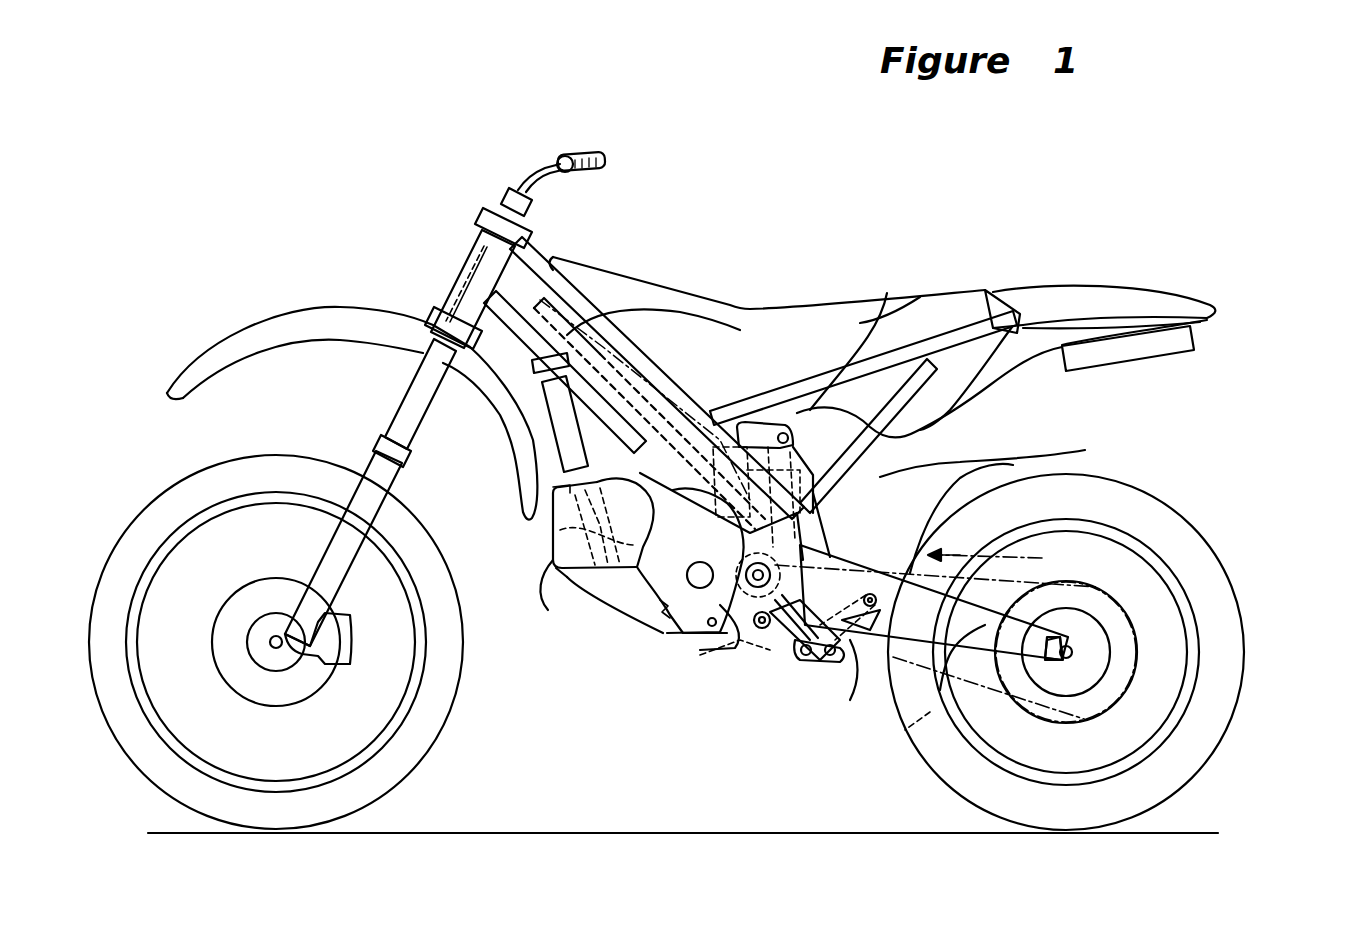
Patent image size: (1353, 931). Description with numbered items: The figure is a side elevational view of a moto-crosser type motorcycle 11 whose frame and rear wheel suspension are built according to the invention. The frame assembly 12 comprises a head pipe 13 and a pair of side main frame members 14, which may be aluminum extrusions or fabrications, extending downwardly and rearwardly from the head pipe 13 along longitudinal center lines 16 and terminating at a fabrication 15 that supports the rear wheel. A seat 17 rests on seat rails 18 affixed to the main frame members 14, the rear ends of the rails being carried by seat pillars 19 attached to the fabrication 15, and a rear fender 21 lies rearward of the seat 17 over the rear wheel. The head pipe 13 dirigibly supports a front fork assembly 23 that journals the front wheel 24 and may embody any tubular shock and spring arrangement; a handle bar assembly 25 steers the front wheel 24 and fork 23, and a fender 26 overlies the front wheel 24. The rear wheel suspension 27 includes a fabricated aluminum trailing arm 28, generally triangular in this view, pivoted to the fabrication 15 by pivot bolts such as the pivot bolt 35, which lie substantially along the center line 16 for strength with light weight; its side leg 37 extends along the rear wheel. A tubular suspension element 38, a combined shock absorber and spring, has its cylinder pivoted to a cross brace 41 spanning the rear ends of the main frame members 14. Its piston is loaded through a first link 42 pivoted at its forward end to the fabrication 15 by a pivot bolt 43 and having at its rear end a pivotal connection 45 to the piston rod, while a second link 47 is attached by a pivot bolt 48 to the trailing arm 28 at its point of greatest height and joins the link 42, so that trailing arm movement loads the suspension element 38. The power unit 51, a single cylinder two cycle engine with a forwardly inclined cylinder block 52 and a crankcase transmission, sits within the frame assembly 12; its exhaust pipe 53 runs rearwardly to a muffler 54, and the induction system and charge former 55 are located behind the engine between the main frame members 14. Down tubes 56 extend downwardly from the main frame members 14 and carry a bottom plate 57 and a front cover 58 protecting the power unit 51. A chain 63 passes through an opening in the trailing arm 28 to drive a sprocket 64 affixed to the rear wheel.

The motorcycle 11 is at (697, 182).
The frame assembly 12 is at (565, 278).
The head pipe 13 is at (471, 268).
The side main frame members 14 is at (690, 307).
The fabrication 15 is at (803, 537).
The longitudinal center lines 16 is at (565, 323).
The seat 17 is at (740, 303).
The seat rails 18 is at (790, 427).
The seat pillars 19 is at (985, 300).
The rear fender 21 is at (1112, 283).
The front fork assembly 23 is at (390, 423).
The front wheel 24 is at (158, 493).
The handle bar assembly 25 is at (582, 153).
The fender 26 is at (255, 323).
The rear wheel suspension 27 is at (1017, 467).
The trailing arm 28 is at (918, 637).
The pivot bolt 35 is at (742, 580).
The side leg 37 is at (983, 610).
The suspension element 38 is at (887, 293).
The cross brace 41 is at (805, 395).
The first link 42 is at (780, 640).
The pivot bolt 43 is at (740, 643).
The pivotal connection 45 is at (827, 683).
The second link 47 is at (850, 650).
The pivot bolt 48 is at (877, 597).
The power unit 51 is at (655, 573).
The cylinder block 52 is at (557, 573).
The exhaust pipe 53 is at (1017, 410).
The muffler 54 is at (1152, 364).
The induction system and charge former 55 is at (745, 415).
The down tubes 56 is at (660, 365).
The bottom plate 57 is at (548, 605).
The front cover 58 is at (537, 527).
The chain 63 is at (960, 680).
The sprocket 64 is at (1244, 616).